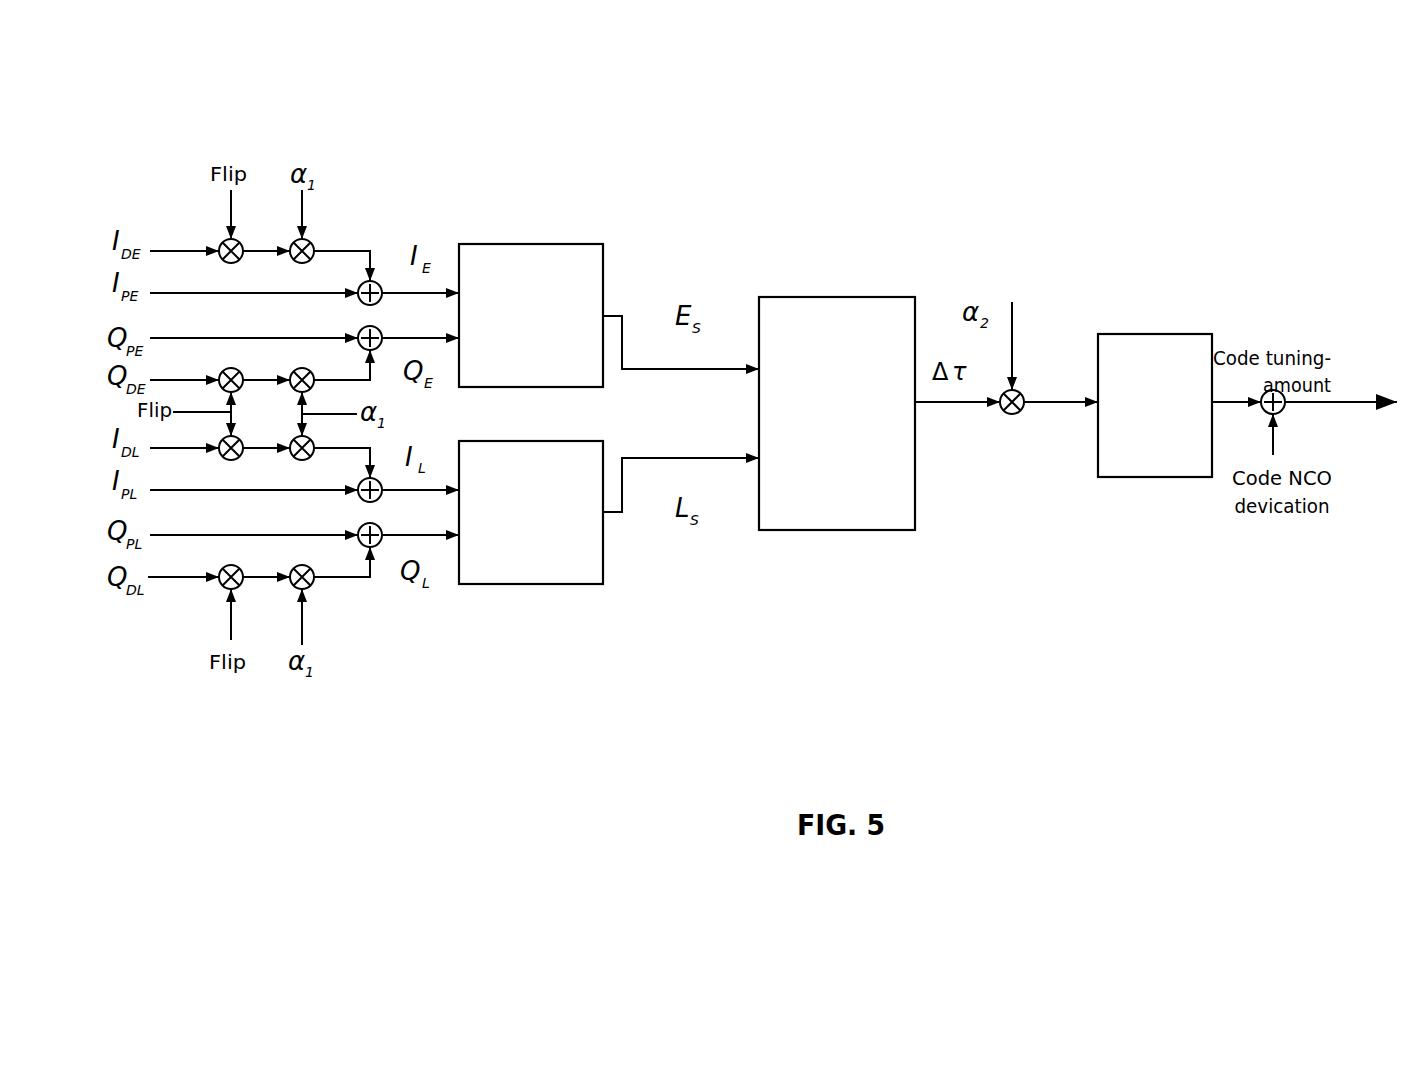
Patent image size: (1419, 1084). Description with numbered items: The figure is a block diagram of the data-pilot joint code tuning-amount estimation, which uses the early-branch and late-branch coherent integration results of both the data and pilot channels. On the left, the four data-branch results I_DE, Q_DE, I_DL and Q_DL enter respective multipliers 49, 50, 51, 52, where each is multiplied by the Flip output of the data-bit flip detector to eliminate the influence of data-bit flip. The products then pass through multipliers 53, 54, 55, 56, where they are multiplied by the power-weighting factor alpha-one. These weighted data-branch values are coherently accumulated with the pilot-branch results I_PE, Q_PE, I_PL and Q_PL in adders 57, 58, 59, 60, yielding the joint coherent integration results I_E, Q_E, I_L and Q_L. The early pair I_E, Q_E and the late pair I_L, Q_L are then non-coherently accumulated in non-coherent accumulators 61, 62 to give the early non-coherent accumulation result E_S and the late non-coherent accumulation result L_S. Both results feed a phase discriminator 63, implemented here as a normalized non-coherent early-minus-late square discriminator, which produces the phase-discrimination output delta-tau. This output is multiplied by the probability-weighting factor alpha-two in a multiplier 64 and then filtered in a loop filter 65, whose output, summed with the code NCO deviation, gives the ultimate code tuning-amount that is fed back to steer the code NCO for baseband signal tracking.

The multiplier 49 is at (218, 249).
The multiplier 50 is at (221, 371).
The multiplier 51 is at (232, 461).
The multiplier 52 is at (222, 589).
The multiplier 53 is at (300, 264).
The multiplier 54 is at (292, 371).
The multiplier 55 is at (293, 458).
The multiplier 56 is at (293, 589).
The adder 57 is at (380, 284).
The adder 58 is at (380, 328).
The adder 59 is at (377, 501).
The adder 60 is at (380, 546).
The non-coherent accumulator 61 is at (504, 244).
The non-coherent accumulator 62 is at (530, 584).
The phase discriminator 63 is at (857, 530).
The multiplier 64 is at (1015, 415).
The loop filter 65 is at (1167, 477).